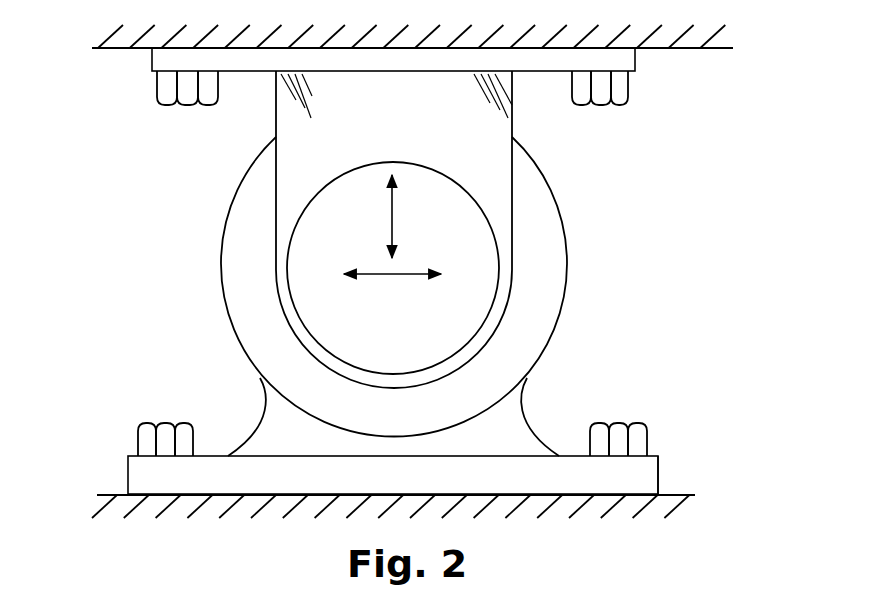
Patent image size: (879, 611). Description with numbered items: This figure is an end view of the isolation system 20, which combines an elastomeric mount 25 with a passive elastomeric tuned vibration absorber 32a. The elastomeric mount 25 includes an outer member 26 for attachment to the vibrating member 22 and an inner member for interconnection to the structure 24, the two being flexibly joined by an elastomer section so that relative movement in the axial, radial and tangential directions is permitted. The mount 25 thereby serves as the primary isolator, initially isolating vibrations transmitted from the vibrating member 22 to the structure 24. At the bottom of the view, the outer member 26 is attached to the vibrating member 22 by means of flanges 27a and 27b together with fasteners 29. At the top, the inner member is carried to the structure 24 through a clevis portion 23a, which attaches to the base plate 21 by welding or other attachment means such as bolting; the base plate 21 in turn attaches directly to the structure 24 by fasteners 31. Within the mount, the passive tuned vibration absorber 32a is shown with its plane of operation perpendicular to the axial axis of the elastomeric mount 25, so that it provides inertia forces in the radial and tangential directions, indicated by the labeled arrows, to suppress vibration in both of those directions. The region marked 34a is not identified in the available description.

The isolation system 20 is at (378, 263).
The base plate 21 is at (636, 60).
The vibrating member 22 is at (688, 504).
The clevis portion 23a is at (394, 170).
The structure 24 is at (722, 33).
The elastomeric mount 25 is at (567, 224).
The outer member 26 is at (566, 298).
The flange 27a is at (128, 465).
The flange 27b is at (658, 465).
The fasteners 29 is at (155, 423).
The fasteners 31 is at (178, 106).
The passive tuned vibration absorber 32a is at (499, 248).
The lower body portion 34a is at (394, 329).